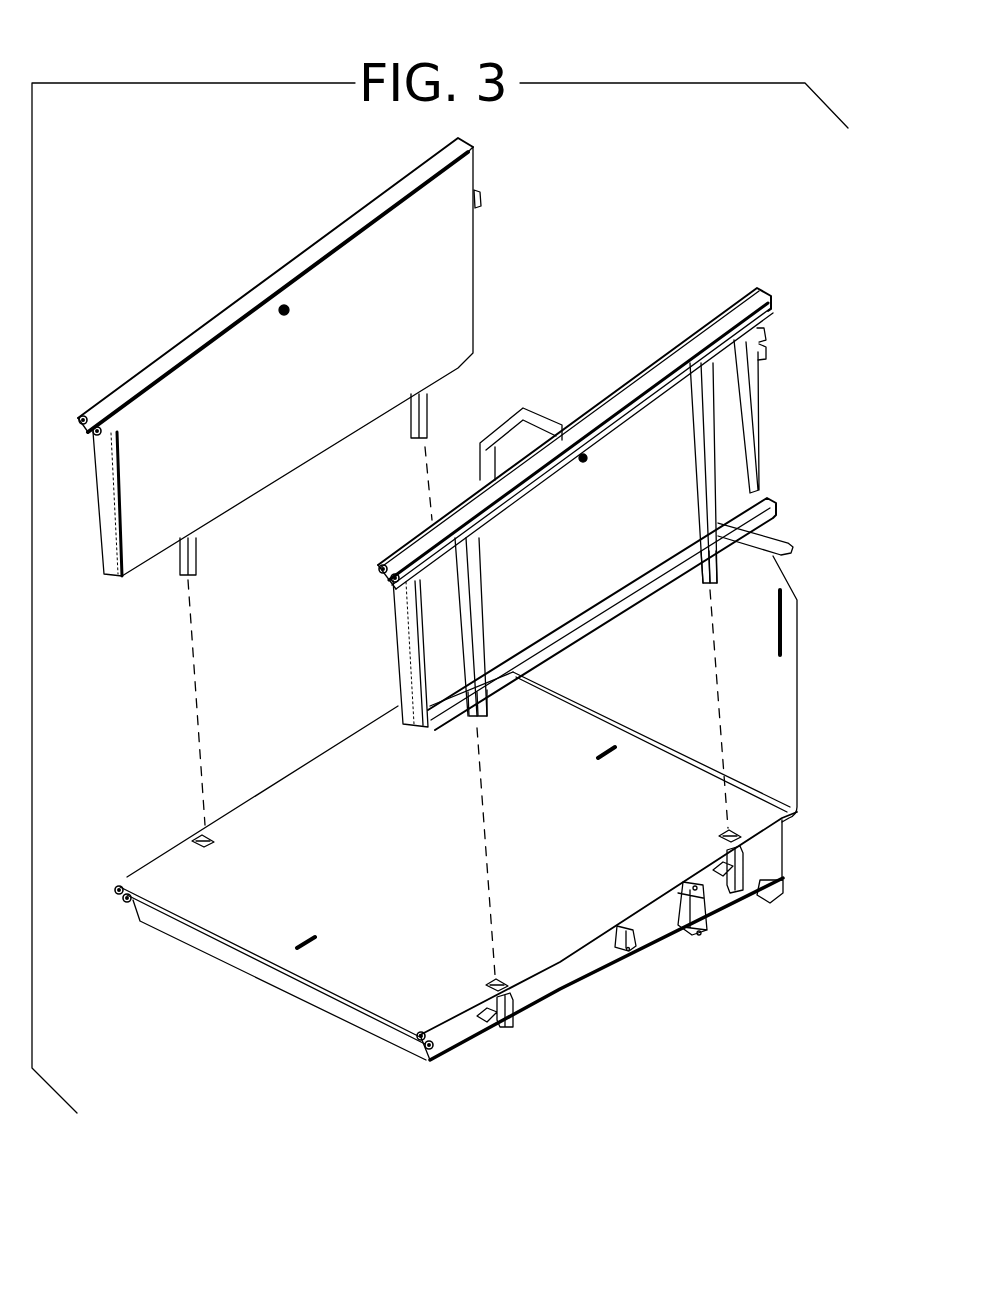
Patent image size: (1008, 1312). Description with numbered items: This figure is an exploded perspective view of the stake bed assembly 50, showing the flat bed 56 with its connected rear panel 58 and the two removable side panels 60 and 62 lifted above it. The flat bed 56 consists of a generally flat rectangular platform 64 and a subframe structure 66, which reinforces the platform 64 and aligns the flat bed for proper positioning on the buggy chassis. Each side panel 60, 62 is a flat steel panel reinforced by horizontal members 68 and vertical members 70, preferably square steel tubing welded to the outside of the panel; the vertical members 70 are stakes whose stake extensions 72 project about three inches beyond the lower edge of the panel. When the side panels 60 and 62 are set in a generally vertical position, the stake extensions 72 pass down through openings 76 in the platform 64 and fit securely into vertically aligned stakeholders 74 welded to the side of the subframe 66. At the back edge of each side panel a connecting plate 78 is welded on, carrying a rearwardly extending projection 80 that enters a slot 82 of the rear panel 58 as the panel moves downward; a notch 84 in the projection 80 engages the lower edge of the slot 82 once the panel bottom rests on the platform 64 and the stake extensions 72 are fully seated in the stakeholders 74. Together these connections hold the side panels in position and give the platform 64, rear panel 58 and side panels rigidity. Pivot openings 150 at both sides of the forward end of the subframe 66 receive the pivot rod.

The stake bed assembly 50 is at (233, 249).
The flat bed 56 is at (509, 841).
The rear panel 58 is at (770, 710).
The side panel 60 is at (259, 475).
The side panel 62 is at (730, 432).
The platform 64 is at (405, 831).
The subframe structure 66 is at (597, 960).
The horizontal member 68 is at (670, 397).
The vertical member 70 is at (690, 474).
The stake extension 72 is at (180, 565).
The stakeholder 74 is at (747, 860).
The opening 76 is at (215, 841).
The connecting plate 78 is at (747, 362).
The projection 80 is at (481, 198).
The slot 82 is at (784, 622).
The notch 84 is at (761, 356).
The pivot opening 150 is at (447, 1055).